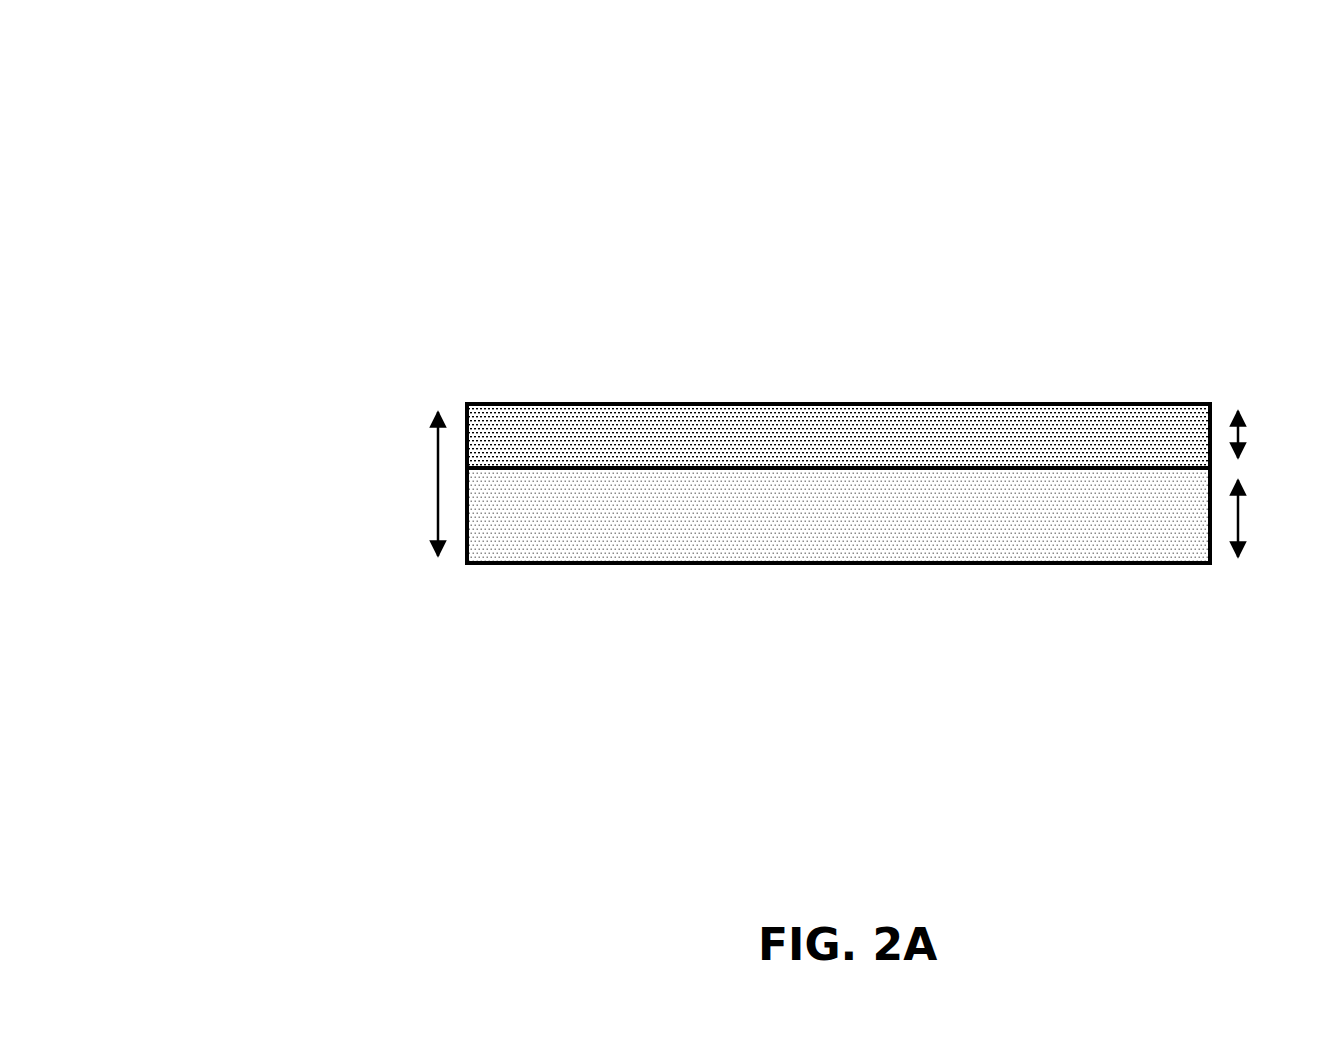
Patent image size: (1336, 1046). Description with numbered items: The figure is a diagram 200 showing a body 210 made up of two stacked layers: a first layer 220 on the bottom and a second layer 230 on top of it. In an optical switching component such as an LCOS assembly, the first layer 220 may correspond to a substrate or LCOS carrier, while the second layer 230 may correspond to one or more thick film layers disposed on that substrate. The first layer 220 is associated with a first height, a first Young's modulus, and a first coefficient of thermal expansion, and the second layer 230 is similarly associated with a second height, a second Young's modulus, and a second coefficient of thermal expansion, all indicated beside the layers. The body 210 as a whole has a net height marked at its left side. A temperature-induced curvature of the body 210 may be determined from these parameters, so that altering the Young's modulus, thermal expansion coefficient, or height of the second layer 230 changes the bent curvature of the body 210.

The diagram 200 is at (330, 62).
The body 210 is at (415, 355).
The first layer 220 is at (838, 515).
The second layer 230 is at (838, 436).